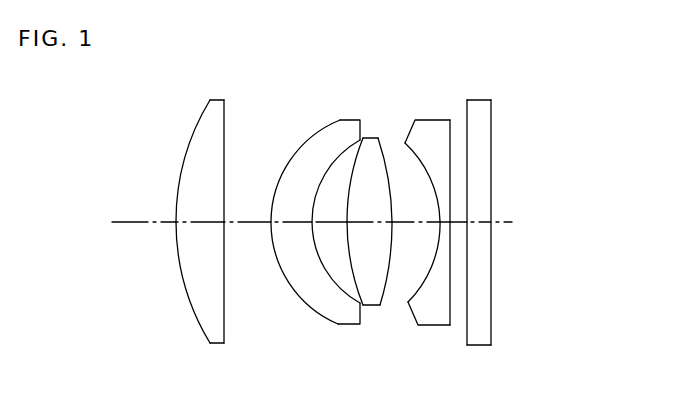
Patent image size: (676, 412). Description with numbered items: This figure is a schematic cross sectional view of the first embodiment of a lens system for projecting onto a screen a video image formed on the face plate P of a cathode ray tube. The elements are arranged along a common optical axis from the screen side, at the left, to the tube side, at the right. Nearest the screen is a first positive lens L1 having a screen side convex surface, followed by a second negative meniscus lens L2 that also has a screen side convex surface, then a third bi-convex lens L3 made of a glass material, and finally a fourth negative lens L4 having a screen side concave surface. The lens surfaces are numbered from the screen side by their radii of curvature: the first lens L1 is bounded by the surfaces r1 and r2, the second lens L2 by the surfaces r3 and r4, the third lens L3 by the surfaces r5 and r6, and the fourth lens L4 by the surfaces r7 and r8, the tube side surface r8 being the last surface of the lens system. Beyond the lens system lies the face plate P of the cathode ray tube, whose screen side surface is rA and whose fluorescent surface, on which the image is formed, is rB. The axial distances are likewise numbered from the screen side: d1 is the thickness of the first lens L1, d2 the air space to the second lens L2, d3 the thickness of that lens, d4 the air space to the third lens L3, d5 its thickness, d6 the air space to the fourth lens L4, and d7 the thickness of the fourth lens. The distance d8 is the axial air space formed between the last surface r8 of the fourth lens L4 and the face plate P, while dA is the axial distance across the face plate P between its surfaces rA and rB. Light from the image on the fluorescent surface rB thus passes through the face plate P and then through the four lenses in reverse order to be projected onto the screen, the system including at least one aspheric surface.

The first positive lens L1 is at (203, 227).
The second negative meniscus lens L2 is at (315, 228).
The third bi-convex lens L3 is at (357, 228).
The fourth negative lens L4 is at (426, 227).
The face plate P is at (495, 216).
The radius of curvature of first surface r1 is at (192, 140).
The radius of curvature of second surface r2 is at (226, 127).
The radius of curvature of third surface r3 is at (309, 137).
The radius of curvature of fourth surface r4 is at (316, 196).
The radius of curvature of fifth surface r5 is at (347, 236).
The radius of curvature of sixth surface r6 is at (384, 148).
The radius of curvature of seventh surface r7 is at (410, 148).
The radius of curvature of eighth surface r8 is at (453, 125).
The screen side surface of face plate rA is at (466, 112).
The fluorescent surface of face plate rB is at (493, 112).
The axial distance d1 is at (200, 210).
The axial distance d2 is at (247, 210).
The axial distance d3 is at (291, 210).
The axial distance d4 is at (329, 210).
The axial distance d5 is at (369, 210).
The axial distance d6 is at (416, 212).
The axial distance d7 is at (447, 220).
The axial distance of air space d8 is at (455, 221).
The axial distance dA is at (480, 222).